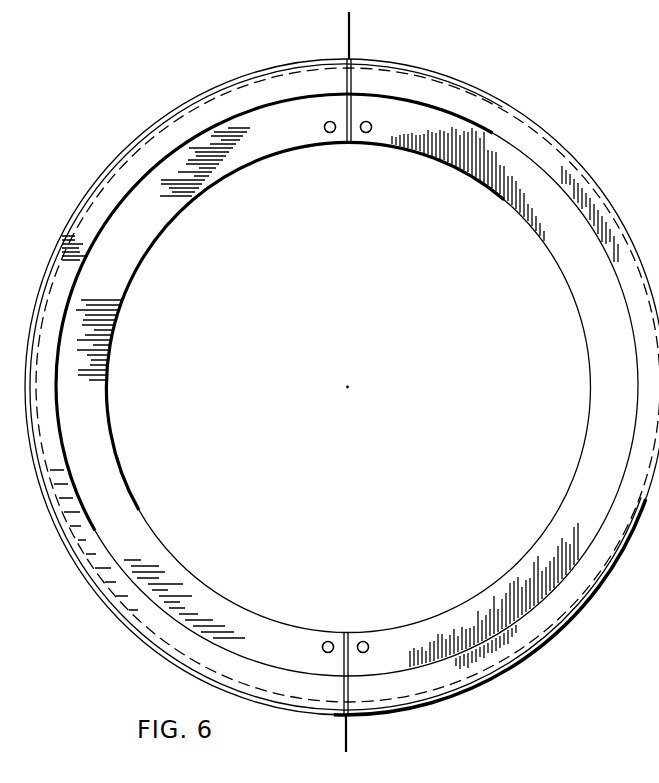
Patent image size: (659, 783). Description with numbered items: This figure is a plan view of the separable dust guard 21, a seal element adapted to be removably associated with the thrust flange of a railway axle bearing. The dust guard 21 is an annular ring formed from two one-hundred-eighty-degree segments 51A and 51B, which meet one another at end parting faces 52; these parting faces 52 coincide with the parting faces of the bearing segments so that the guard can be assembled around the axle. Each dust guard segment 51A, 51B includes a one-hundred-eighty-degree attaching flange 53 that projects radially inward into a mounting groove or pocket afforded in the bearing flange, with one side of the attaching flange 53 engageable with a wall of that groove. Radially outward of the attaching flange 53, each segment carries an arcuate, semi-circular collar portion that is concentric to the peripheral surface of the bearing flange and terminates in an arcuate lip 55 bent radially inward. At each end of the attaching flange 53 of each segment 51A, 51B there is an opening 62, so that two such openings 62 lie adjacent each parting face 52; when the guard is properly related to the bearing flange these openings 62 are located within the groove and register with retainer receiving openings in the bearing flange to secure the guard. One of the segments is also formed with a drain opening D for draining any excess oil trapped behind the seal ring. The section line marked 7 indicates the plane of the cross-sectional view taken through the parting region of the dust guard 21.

The section line 7- 7 is at (356, 20).
The dust guard 21 is at (190, 96).
The dust guard segment 51A is at (122, 155).
The dust guard segment 51B is at (466, 81).
The end parting faces 52 is at (345, 83).
The attaching flange 53 is at (107, 487).
The arcuate lip 55 is at (191, 650).
The opening 62 is at (330, 133).
The drain opening D is at (480, 680).